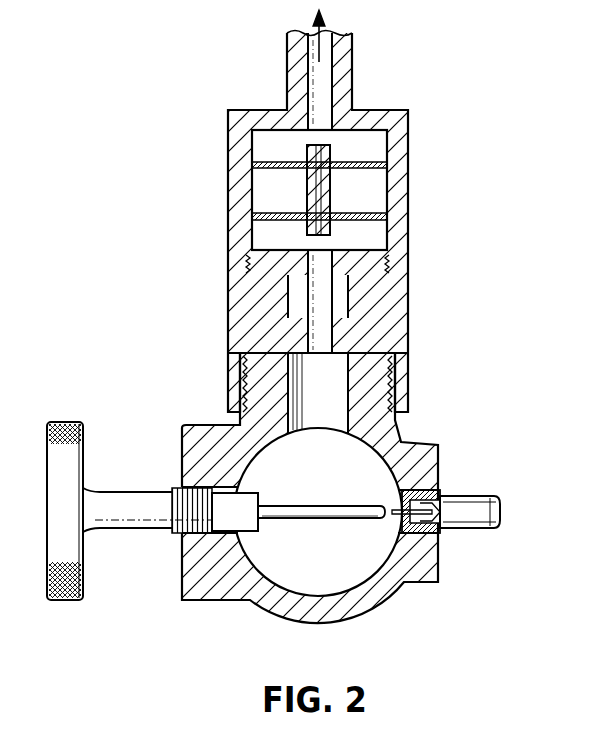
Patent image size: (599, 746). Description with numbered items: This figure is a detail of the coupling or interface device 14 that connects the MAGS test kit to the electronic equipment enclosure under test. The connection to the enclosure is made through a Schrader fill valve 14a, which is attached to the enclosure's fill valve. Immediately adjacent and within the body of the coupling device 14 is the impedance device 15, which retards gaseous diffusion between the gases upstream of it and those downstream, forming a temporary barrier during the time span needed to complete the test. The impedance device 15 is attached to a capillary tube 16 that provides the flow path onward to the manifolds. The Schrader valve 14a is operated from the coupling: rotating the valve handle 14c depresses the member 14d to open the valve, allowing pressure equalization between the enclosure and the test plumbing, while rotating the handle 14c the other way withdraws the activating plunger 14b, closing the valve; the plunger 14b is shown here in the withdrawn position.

The coupling device 14 is at (427, 284).
The Schrader fill valve 14a is at (487, 507).
The activating plunger 14b is at (378, 500).
The valve handle 14c is at (117, 500).
The plunger actuating member 14d is at (386, 528).
The impedance device 15 is at (333, 152).
The capillary tube 16 is at (319, 34).